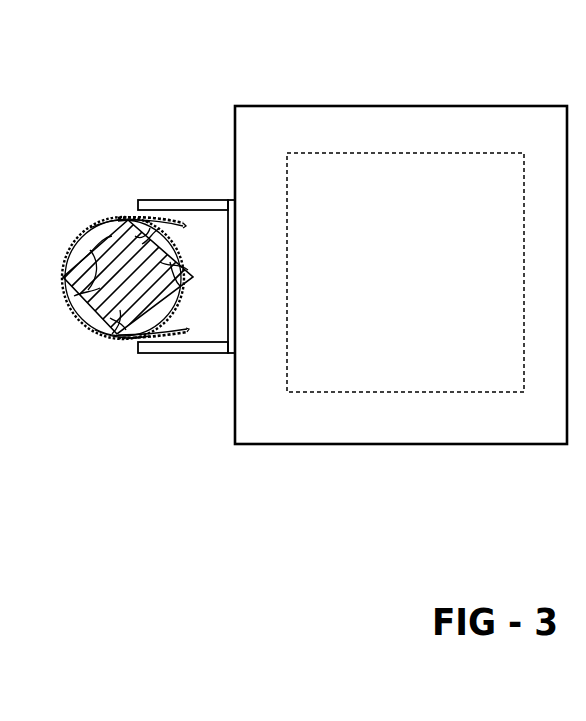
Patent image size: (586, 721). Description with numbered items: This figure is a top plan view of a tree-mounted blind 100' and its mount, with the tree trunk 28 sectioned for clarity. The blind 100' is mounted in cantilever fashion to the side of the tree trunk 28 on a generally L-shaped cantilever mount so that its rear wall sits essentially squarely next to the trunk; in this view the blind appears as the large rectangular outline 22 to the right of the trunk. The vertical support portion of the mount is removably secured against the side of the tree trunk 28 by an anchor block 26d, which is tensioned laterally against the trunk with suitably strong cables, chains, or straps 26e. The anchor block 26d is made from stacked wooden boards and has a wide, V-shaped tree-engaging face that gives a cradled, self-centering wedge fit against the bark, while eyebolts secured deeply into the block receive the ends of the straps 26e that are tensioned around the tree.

The tree-mounted blind 100' is at (503, 47).
The backing plate 22 is at (302, 105).
The upper anchor block 26d is at (217, 227).
The straps 26e is at (62, 257).
The tree trunk 28 is at (80, 236).